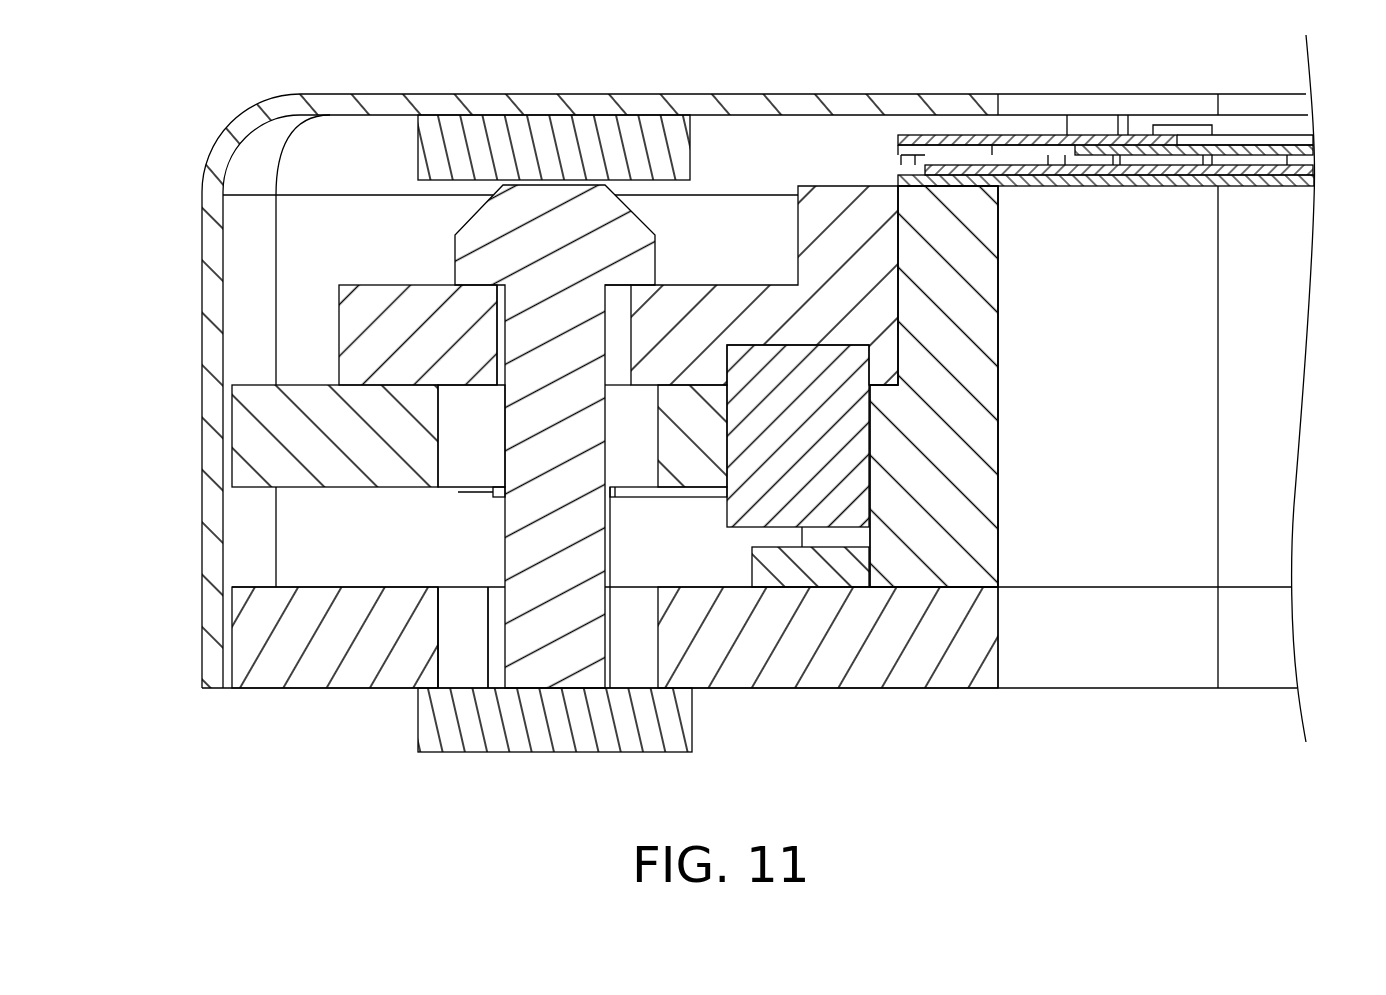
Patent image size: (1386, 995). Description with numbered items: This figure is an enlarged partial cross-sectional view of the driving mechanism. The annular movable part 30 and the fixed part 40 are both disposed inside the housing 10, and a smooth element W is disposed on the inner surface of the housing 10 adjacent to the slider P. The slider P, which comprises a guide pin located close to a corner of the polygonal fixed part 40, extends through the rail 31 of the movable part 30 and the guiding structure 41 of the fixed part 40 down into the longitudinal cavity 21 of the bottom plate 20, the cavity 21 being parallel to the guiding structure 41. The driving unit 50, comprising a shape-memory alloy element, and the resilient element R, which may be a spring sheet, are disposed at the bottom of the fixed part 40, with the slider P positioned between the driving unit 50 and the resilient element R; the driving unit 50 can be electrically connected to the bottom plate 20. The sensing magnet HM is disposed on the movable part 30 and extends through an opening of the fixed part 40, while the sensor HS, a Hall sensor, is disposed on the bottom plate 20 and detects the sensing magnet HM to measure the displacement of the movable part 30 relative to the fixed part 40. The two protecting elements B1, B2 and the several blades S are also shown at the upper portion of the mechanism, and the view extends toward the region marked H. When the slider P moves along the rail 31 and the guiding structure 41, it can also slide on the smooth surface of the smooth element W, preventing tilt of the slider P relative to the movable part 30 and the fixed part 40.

The housing 10 is at (212, 265).
The bottom plate 20 is at (905, 640).
The longitudinal cavity 21 is at (466, 653).
The annular movable part 30 is at (378, 327).
The rail 31 is at (620, 310).
The fixed part 40 is at (262, 457).
The guiding structure 41 is at (458, 435).
The driving unit 50 is at (458, 492).
The slider P is at (557, 653).
The resilient element R is at (640, 498).
The smooth element W is at (523, 135).
The sensing magnet HM is at (778, 397).
The sensor HS is at (817, 567).
The protecting element B1 is at (963, 140).
The protecting element B2 is at (1302, 183).
The blades S is at (1245, 160).
The hand / host surface H is at (1272, 388).